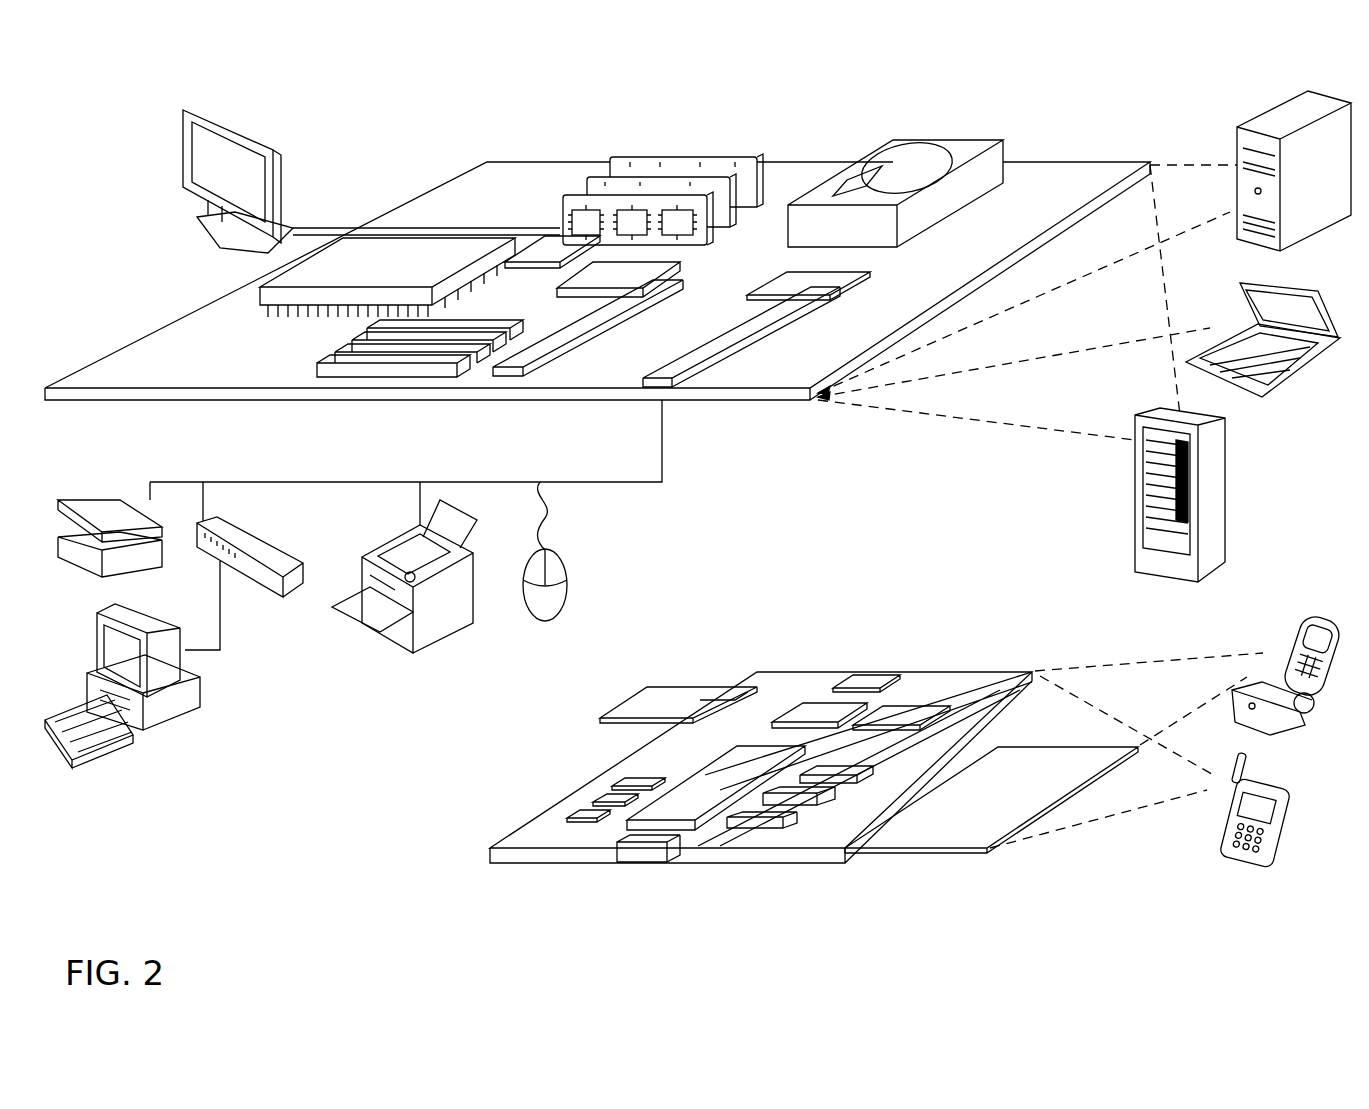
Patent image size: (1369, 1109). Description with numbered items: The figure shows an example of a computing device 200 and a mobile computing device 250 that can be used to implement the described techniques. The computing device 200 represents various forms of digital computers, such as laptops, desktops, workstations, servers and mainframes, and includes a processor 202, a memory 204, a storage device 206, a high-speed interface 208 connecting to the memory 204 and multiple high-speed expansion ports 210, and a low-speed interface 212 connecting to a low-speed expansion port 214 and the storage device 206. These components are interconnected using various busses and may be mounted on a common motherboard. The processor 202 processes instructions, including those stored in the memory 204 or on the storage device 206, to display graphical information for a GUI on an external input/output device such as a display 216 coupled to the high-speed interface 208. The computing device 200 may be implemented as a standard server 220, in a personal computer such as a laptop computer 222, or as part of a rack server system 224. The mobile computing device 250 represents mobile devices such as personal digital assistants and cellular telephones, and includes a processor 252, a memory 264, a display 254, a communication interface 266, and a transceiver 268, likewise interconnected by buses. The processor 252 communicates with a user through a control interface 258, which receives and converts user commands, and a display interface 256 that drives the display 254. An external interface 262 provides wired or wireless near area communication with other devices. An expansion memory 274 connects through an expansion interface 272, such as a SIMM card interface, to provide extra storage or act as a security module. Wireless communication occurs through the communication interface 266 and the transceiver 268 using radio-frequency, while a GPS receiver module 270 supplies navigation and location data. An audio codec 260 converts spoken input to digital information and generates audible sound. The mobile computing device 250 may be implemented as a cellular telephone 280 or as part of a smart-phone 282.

The computing device 200 is at (400, 137).
The processor 202 is at (257, 295).
The memory 204 is at (627, 155).
The storage device 206 is at (890, 142).
The high-speed interface 208 is at (540, 257).
The high-speed expansion ports 210 is at (330, 356).
The low-speed interface 212 is at (787, 272).
The low-speed expansion port 214 is at (677, 398).
The display 216 is at (190, 103).
The standard server 220 is at (1237, 143).
The laptop computer 222 is at (1300, 300).
The rack server system 224 is at (1135, 520).
The mobile computing device 250 is at (462, 857).
The processor 252 is at (683, 822).
The display 254 is at (958, 845).
The display interface 256 is at (760, 823).
The control interface 258 is at (812, 800).
The audio codec 260 is at (830, 777).
The external interface 262 is at (647, 855).
The memory 264 is at (590, 812).
The communication interface 266 is at (817, 713).
The transceiver 268 is at (907, 708).
The GPS receiver module 270 is at (877, 670).
The expansion interface 272 is at (740, 686).
The expansion memory 274 is at (647, 686).
The cellular telephone 280 is at (1285, 625).
The smart-phone 282 is at (1222, 822).